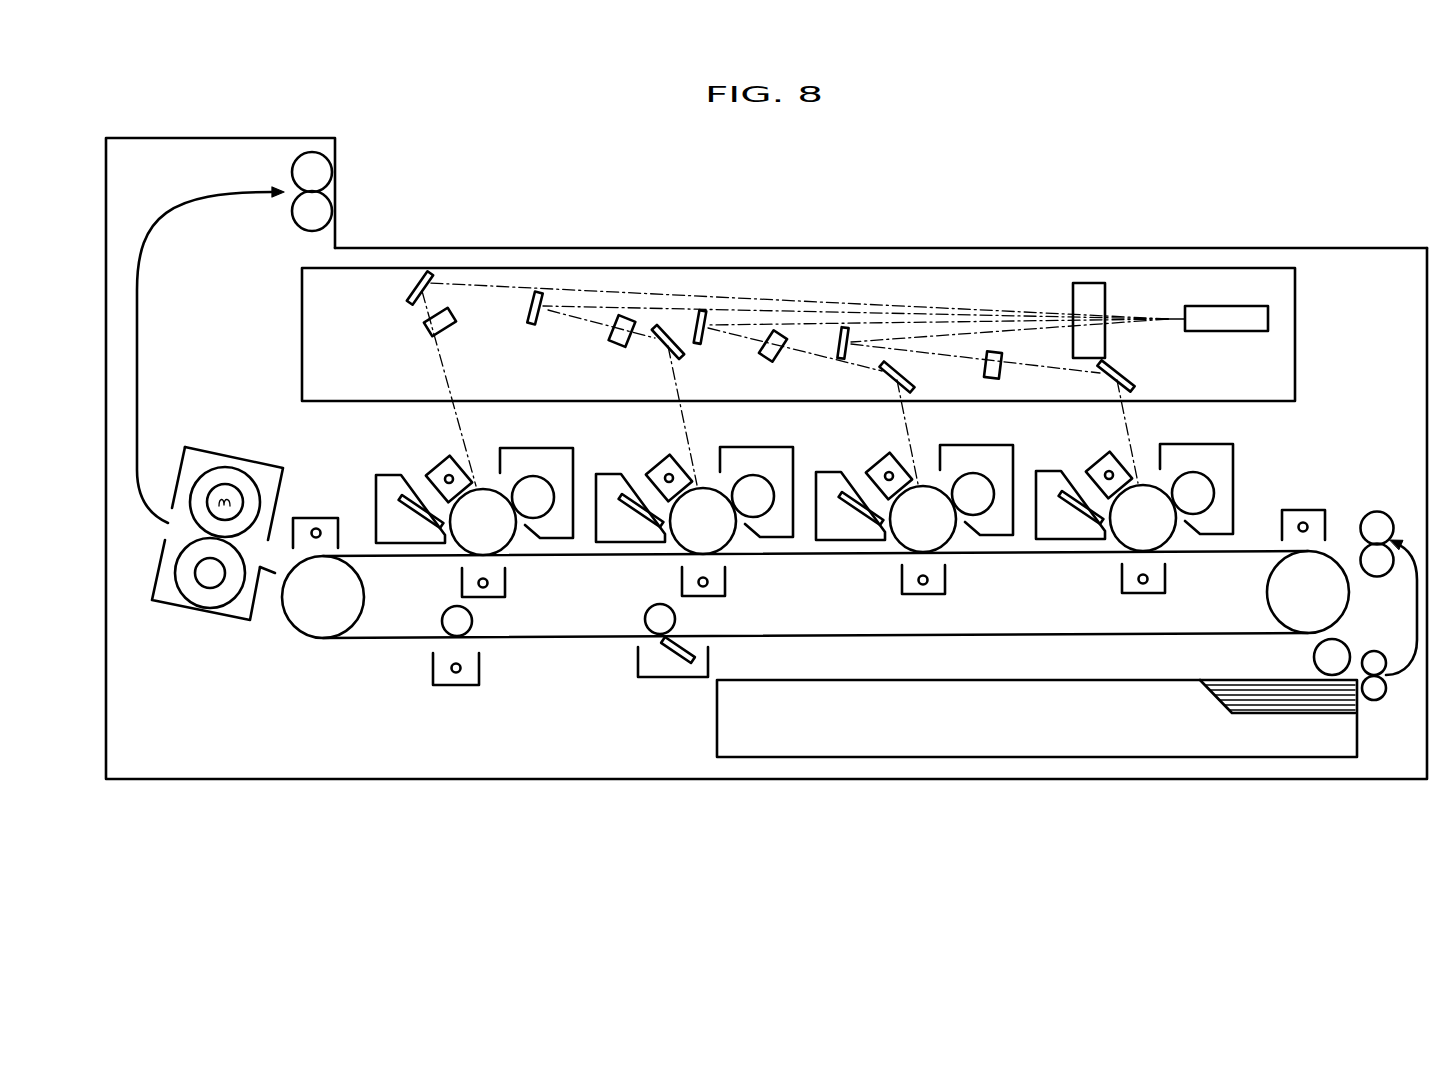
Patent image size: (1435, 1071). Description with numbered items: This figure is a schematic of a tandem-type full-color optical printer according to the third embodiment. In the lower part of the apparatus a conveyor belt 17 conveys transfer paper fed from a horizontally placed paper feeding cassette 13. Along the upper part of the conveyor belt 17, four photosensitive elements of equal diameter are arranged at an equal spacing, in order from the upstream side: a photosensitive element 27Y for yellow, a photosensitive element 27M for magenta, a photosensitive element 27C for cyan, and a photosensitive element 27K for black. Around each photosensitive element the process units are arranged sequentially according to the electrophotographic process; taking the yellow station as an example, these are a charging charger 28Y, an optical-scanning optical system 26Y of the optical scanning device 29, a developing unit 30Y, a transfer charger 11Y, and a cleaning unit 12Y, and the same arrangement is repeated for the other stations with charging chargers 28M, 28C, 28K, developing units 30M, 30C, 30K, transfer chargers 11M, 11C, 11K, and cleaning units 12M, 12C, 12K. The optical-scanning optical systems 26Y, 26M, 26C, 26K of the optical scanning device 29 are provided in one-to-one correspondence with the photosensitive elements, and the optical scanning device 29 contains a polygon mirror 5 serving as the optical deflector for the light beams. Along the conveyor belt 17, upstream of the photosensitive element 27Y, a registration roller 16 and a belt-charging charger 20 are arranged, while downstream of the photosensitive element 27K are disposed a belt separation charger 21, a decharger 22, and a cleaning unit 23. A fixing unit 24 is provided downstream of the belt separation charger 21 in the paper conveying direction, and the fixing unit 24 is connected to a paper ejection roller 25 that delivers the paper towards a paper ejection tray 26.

The polygon mirror 5 is at (1268, 318).
The transfer charger 11K is at (517, 594).
The transfer charger 11C is at (737, 593).
The transfer charger 11M is at (959, 591).
The transfer charger 11Y is at (1177, 590).
The cleaning unit 12K is at (410, 545).
The cleaning unit 12C is at (630, 544).
The cleaning unit 12M is at (851, 542).
The cleaning unit 12Y is at (1070, 541).
The paper feeding cassette 13 is at (717, 742).
The registration roller 16 is at (1378, 510).
The conveyor belt 17 is at (983, 634).
The belt-charging charger 20 is at (1308, 508).
The belt separation charger 21 is at (318, 516).
The decharger 22 is at (470, 685).
The cleaning unit 23 is at (647, 677).
The fixing unit 24 is at (233, 620).
The paper ejection roller 25 is at (355, 173).
The paper ejection tray 26 is at (716, 247).
The optical-scanning optical system 26K is at (485, 442).
The optical-scanning optical system 26C is at (705, 441).
The optical-scanning optical system 26M is at (925, 439).
The optical-scanning optical system 26Y is at (1145, 438).
The photosensitive element 27K is at (515, 540).
The photosensitive element 27C is at (735, 539).
The photosensitive element 27M is at (957, 537).
The photosensitive element 27Y is at (1174, 536).
The charging charger 28K is at (436, 462).
The charging charger 28C is at (656, 461).
The charging charger 28M is at (876, 459).
The charging charger 28Y is at (1096, 458).
The optical scanning device 29 is at (302, 283).
The developing unit 30K is at (542, 475).
The developing unit 30C is at (762, 474).
The developing unit 30M is at (984, 472).
The developing unit 30Y is at (1202, 471).